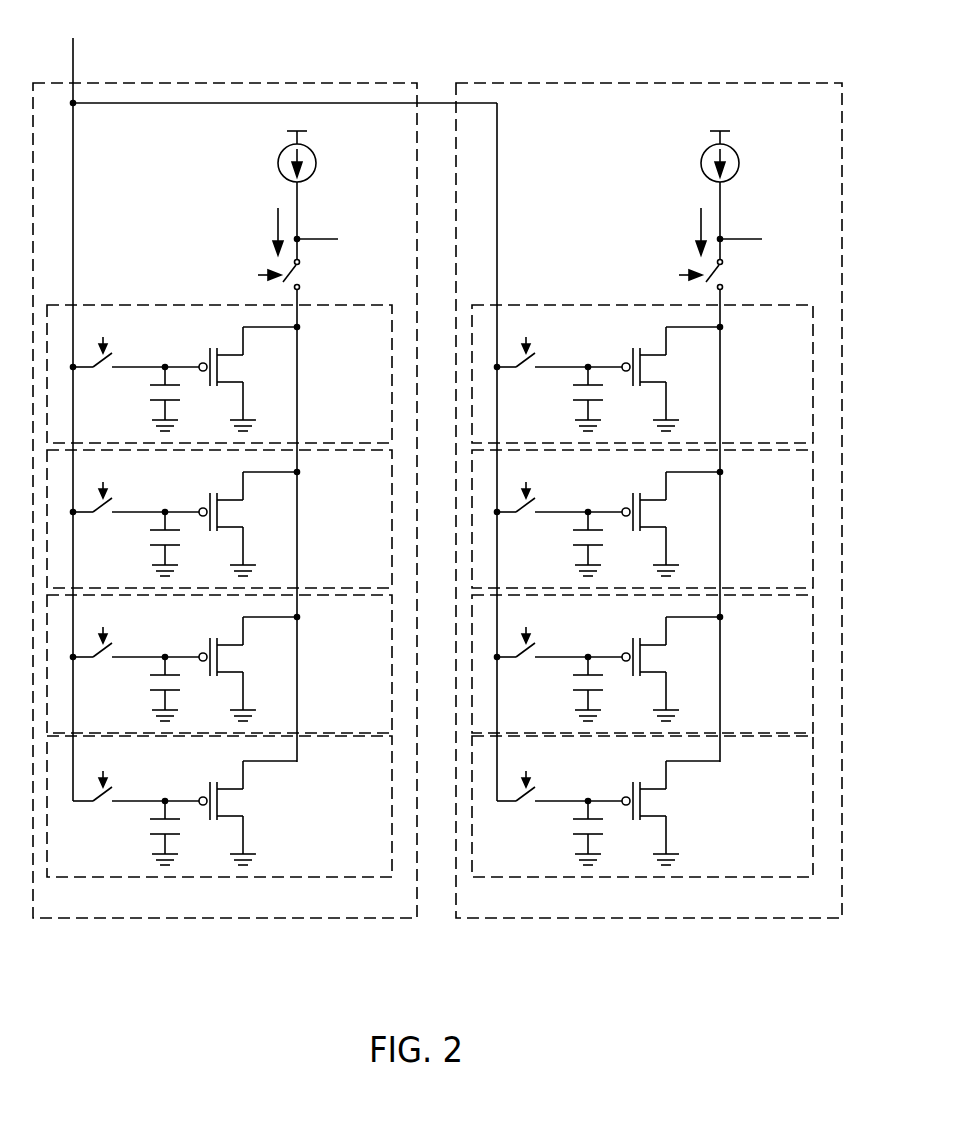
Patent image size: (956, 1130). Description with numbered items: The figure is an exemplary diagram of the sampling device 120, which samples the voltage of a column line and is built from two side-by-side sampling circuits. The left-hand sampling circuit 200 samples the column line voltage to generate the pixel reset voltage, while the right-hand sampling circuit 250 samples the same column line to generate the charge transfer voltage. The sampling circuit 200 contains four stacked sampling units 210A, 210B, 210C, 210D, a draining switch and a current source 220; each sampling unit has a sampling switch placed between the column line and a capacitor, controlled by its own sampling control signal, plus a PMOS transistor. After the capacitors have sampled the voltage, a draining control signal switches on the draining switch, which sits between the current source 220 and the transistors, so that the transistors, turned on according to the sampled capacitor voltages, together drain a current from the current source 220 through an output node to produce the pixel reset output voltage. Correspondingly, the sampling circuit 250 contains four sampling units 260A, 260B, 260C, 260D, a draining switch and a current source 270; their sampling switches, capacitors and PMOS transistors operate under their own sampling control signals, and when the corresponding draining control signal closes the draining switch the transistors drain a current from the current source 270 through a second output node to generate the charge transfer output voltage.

The sampling device 120 is at (727, 46).
The sampling circuit 200 is at (118, 915).
The sampling circuit 250 is at (649, 500).
The current source 220 is at (315, 152).
The current source 270 is at (753, 152).
The sampling unit 210A is at (378, 430).
The sampling unit 210B is at (378, 430).
The sampling unit 210C is at (219, 664).
The sampling unit 210D is at (219, 806).
The sampling unit 260A is at (642, 374).
The sampling unit 260B is at (642, 519).
The sampling unit 260C is at (642, 664).
The sampling unit 260D is at (642, 806).